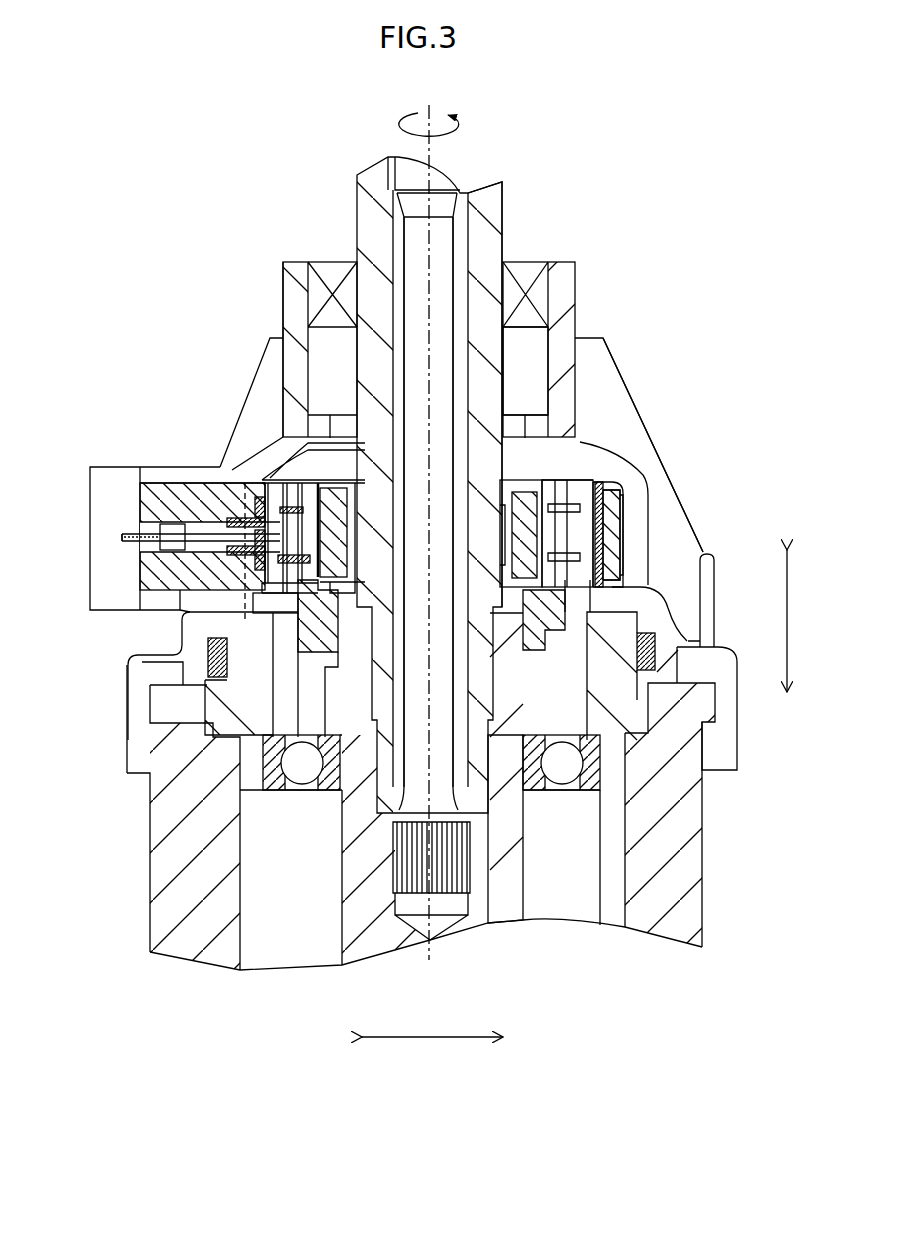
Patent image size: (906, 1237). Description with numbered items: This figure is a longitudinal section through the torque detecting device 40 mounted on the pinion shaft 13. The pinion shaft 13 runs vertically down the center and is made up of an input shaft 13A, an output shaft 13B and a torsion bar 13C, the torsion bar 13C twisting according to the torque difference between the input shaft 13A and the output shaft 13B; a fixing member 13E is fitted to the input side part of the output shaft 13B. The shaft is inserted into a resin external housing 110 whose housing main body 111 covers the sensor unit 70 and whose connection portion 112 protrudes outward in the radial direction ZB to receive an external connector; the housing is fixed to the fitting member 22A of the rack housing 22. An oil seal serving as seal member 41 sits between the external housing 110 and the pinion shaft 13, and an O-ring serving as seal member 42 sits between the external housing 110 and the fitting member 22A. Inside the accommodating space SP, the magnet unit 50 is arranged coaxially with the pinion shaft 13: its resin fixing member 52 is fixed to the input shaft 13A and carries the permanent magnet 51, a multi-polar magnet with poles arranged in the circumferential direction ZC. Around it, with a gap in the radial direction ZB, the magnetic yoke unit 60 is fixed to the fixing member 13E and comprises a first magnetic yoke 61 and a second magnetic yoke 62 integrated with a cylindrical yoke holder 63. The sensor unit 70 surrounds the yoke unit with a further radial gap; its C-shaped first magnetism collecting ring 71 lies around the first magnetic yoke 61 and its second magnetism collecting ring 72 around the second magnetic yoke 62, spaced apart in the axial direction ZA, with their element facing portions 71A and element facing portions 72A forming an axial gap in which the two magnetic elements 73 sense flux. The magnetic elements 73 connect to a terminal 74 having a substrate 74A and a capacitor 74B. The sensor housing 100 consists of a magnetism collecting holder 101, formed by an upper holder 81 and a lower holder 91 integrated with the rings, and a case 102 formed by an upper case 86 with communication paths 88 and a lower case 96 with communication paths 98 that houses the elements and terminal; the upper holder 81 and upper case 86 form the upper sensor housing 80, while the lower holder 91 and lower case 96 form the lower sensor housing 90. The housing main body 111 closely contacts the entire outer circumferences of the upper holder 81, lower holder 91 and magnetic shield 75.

The pinion shaft 13 is at (507, 167).
The input shaft 13A is at (500, 206).
The output shaft 13B is at (475, 930).
The torsion bar 13C is at (415, 232).
The fixing member 13E is at (335, 663).
The rack housing 22 is at (705, 862).
The fitting member 22A is at (720, 705).
The torque detecting device 40 is at (255, 121).
The seal member 41 is at (525, 263).
The seal member 42 is at (715, 647).
The magnet unit 50 is at (498, 476).
The permanent magnet 51 is at (515, 527).
The fixing member 52 is at (345, 540).
The magnetic yoke unit 60 is at (556, 658).
The first magnetic yoke 61 is at (555, 495).
The second magnetic yoke 62 is at (575, 620).
The yoke holder 63 is at (590, 640).
The sensor unit 70 is at (605, 478).
The first magnetism collecting ring 71 is at (277, 476).
The element facing portions 71A is at (196, 470).
The second magnetism collecting ring 72 is at (287, 600).
The element facing portions 72A is at (247, 594).
The magnetic elements 73 is at (160, 515).
The terminal 74 is at (140, 545).
The substrate 74A is at (163, 600).
The capacitor 74B is at (110, 540).
The magnetic shield 75 is at (625, 525).
The upper sensor housing 80 is at (632, 497).
The upper holder 81 is at (608, 482).
The upper case 86 is at (162, 483).
The communication paths 88 is at (246, 483).
The lower sensor housing 90 is at (630, 553).
The lower holder 91 is at (615, 595).
The lower case 96 is at (145, 600).
The communication paths 98 is at (258, 617).
The sensor housing 100 is at (692, 432).
The magnetism collecting holder 101 is at (635, 470).
The case 102 is at (125, 545).
The external housing 110 is at (272, 247).
The housing main body 111 is at (283, 296).
The connection portion 112 is at (100, 467).
The accommodating space SP is at (535, 353).
The axial direction ZA is at (805, 621).
The radial direction ZB is at (432, 1024).
The circumferential direction ZC is at (447, 125).